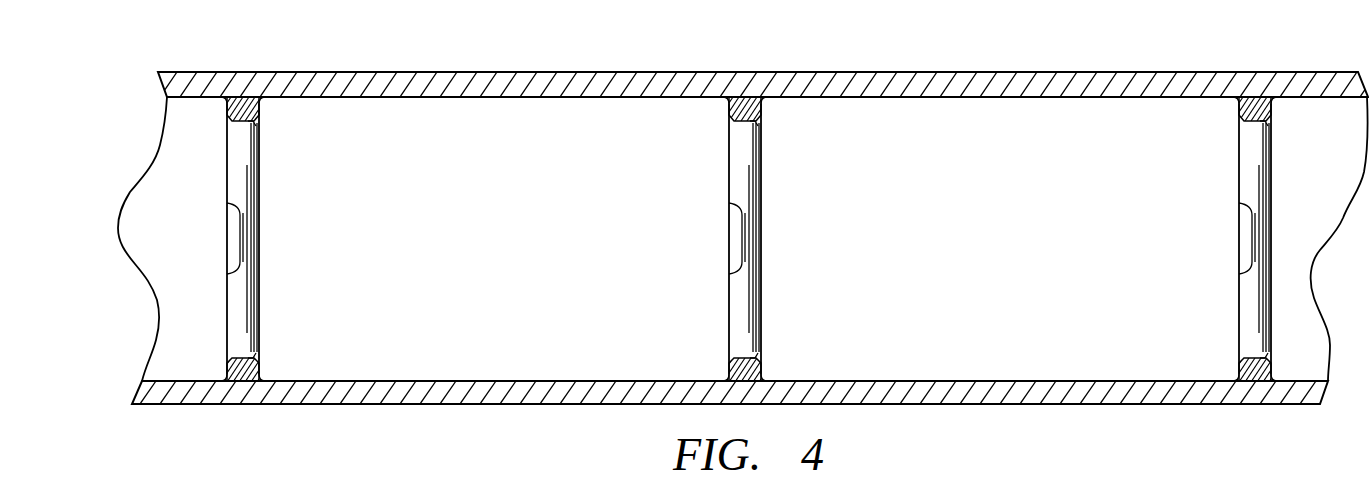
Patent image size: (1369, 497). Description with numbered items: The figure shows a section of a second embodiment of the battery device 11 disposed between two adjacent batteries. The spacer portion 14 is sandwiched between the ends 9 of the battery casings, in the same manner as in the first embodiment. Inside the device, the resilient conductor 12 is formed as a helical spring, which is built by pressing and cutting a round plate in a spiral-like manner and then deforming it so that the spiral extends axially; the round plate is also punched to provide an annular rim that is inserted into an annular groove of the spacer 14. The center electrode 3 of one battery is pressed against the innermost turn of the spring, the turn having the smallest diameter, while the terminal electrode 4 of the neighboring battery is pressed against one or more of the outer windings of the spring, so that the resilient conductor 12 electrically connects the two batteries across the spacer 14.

The center electrode 3 is at (711, 238).
The terminal electrode 4 is at (769, 242).
The ends of the battery casings 9 is at (747, 239).
The battery device 11 is at (750, 88).
The resilient conductor 12 is at (794, 237).
The spacer 14 is at (736, 75).